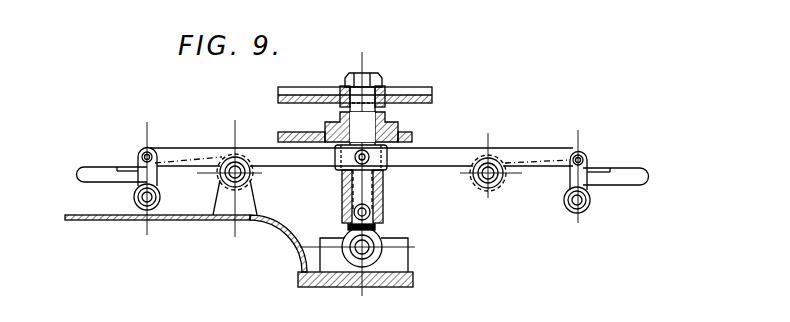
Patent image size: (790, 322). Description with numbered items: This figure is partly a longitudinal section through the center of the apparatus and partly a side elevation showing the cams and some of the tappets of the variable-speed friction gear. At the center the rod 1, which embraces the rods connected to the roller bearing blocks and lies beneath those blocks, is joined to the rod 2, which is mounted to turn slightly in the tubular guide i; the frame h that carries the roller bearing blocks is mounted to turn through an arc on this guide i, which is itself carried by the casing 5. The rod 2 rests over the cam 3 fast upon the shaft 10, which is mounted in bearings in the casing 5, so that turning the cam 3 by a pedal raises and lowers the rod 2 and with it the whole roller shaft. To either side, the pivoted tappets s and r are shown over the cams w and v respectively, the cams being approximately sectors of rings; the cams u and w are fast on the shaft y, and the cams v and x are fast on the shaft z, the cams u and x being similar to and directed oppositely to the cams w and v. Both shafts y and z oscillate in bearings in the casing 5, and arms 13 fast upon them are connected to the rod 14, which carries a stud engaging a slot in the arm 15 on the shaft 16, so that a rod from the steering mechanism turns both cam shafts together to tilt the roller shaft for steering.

The rod 1 is at (436, 97).
The rod 2 is at (350, 108).
The frame h is at (403, 130).
The tubular guide i is at (345, 172).
The rod 14 is at (440, 152).
The arms 13 is at (138, 161).
The tappet s is at (101, 178).
The cam w is at (134, 198).
The cam u is at (160, 198).
The shaft y is at (149, 203).
The casing 5 is at (286, 240).
The arm 15 is at (354, 192).
The shaft 16 is at (374, 213).
The cam 3 is at (396, 250).
The shaft 10 is at (362, 249).
The tappet r is at (621, 179).
The cam v is at (564, 204).
The cam x is at (591, 203).
The shaft z is at (583, 209).